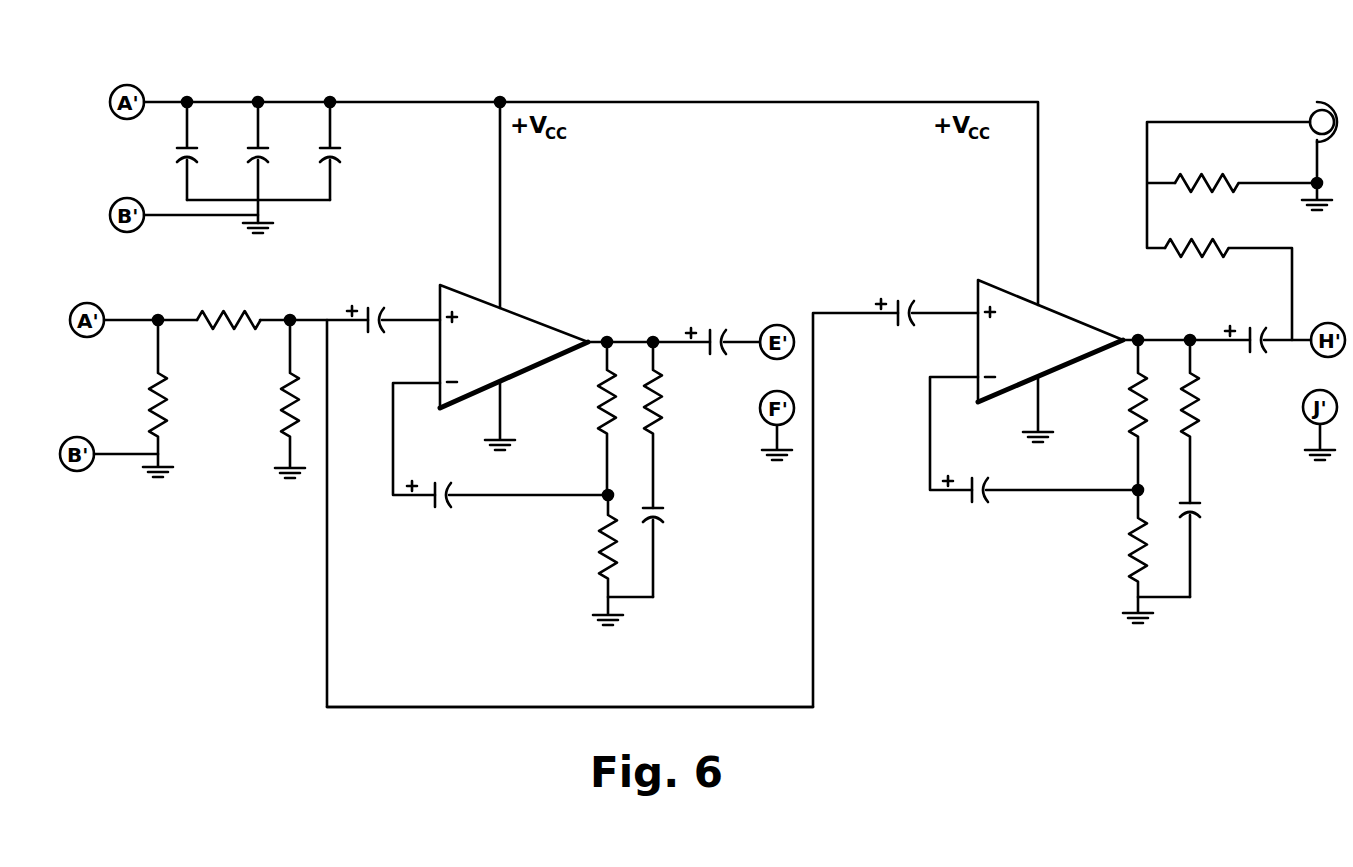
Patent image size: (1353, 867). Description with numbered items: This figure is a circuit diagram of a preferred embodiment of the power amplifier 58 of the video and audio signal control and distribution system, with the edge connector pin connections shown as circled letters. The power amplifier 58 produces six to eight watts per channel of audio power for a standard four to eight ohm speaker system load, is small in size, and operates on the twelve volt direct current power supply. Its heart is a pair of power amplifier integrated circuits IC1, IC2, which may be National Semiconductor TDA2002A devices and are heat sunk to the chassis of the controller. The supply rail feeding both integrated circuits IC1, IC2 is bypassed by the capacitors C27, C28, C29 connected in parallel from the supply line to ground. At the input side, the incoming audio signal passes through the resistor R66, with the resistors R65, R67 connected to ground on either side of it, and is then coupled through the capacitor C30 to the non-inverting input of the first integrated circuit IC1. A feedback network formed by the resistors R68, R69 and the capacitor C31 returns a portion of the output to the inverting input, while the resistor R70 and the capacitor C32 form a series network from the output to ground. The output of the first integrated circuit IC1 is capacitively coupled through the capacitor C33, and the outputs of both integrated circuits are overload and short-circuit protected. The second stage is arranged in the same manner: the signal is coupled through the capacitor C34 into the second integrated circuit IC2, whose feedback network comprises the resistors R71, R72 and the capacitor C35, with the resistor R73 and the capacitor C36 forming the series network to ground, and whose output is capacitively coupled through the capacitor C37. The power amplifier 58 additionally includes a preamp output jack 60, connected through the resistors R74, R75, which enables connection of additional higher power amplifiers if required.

The power amplifier 58 is at (876, 622).
The preamp output jack 60 is at (1336, 102).
The resistor R65 is at (131, 398).
The resistor R66 is at (229, 308).
The resistor R67 is at (266, 399).
The resistor R68 is at (576, 418).
The resistor R69 is at (581, 560).
The resistor R70 is at (676, 425).
The resistor R71 is at (1116, 415).
The resistor R72 is at (1116, 556).
The resistor R73 is at (1214, 421).
The resistor R74 is at (1197, 264).
The resistor R75 is at (1207, 199).
The capacitor C27 is at (207, 151).
The capacitor C28 is at (279, 162).
The capacitor C29 is at (351, 151).
The capacitor C30 is at (372, 305).
The capacitor C31 is at (437, 483).
The capacitor C32 is at (675, 529).
The capacitor C33 is at (710, 323).
The capacitor C34 is at (902, 294).
The capacitor C35 is at (972, 478).
The capacitor C36 is at (1219, 545).
The capacitor C37 is at (1251, 325).
The power amplifier integrated circuit IC1 is at (514, 346).
The power amplifier integrated circuit IC2 is at (1050, 341).